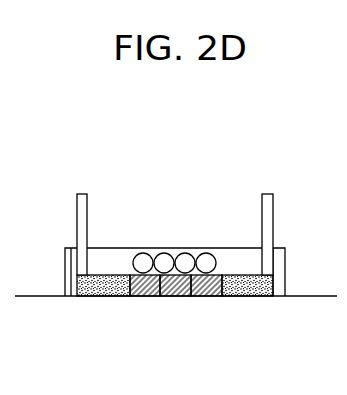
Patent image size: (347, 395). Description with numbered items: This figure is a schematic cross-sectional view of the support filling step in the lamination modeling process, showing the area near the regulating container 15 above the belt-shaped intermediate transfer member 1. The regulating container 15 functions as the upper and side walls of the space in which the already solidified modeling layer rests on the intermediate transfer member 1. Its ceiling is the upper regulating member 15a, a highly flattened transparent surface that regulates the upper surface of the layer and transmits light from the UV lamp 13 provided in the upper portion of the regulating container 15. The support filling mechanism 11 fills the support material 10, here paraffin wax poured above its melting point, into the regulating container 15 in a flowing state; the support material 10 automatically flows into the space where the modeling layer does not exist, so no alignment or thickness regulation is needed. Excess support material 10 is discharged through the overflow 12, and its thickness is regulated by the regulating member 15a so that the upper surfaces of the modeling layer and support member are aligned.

The intermediate transfer member 1 is at (38, 297).
The support material 10 is at (95, 297).
The support filling mechanism 11 is at (82, 174).
The overflow 12 is at (267, 187).
The UV lamp 13 is at (205, 262).
The regulating container 15 is at (285, 269).
The upper regulating member 15a is at (107, 266).